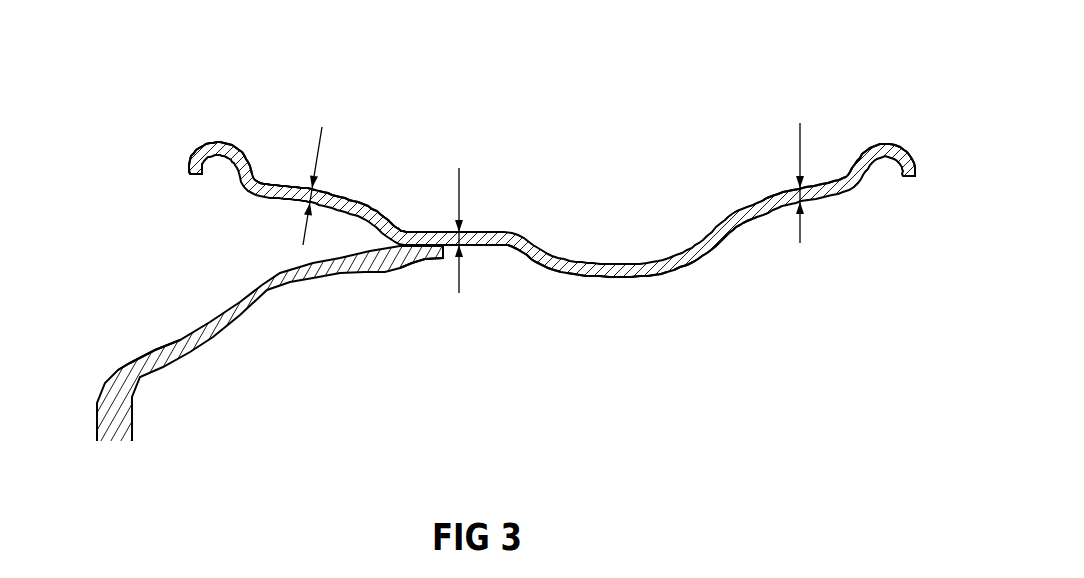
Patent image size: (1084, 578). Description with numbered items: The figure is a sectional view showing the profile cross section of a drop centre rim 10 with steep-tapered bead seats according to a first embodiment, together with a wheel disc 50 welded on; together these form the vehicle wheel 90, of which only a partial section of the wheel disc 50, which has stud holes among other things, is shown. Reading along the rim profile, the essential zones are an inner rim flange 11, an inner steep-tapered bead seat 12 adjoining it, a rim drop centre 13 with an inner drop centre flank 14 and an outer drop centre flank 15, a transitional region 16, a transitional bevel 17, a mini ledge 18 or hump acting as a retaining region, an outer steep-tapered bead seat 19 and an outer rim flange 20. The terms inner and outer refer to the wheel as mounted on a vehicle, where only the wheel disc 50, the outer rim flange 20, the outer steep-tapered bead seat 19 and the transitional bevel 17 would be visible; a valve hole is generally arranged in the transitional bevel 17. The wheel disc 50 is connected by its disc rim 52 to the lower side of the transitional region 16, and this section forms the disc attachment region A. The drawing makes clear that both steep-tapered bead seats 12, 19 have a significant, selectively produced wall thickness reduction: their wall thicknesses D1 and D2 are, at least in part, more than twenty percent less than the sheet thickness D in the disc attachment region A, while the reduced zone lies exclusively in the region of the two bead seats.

The drop centre rim 10 is at (602, 187).
The inner rim flange 11 is at (903, 120).
The inner steep-tapered bead seat 12 is at (785, 165).
The rim drop centre 13 is at (630, 300).
The inner drop centre flank 14 is at (728, 258).
The outer drop centre flank 15 is at (508, 268).
The transitional region 16 is at (503, 200).
The transitional bevel 17 is at (410, 198).
The mini ledge 18 is at (372, 176).
The outer steep-tapered bead seat 19 is at (299, 164).
The outer rim flange 20 is at (200, 129).
The wheel disc 50 is at (183, 343).
The disc rim 52 is at (422, 260).
The vehicle wheel 90 is at (122, 292).
The disc attachment region A is at (434, 217).
The thickness in the disc attachment region D is at (473, 230).
The wall thickness in the inner steep-tapered bead seat D1 is at (817, 183).
The wall thickness in the outer steep-tapered bead seat D2 is at (329, 186).